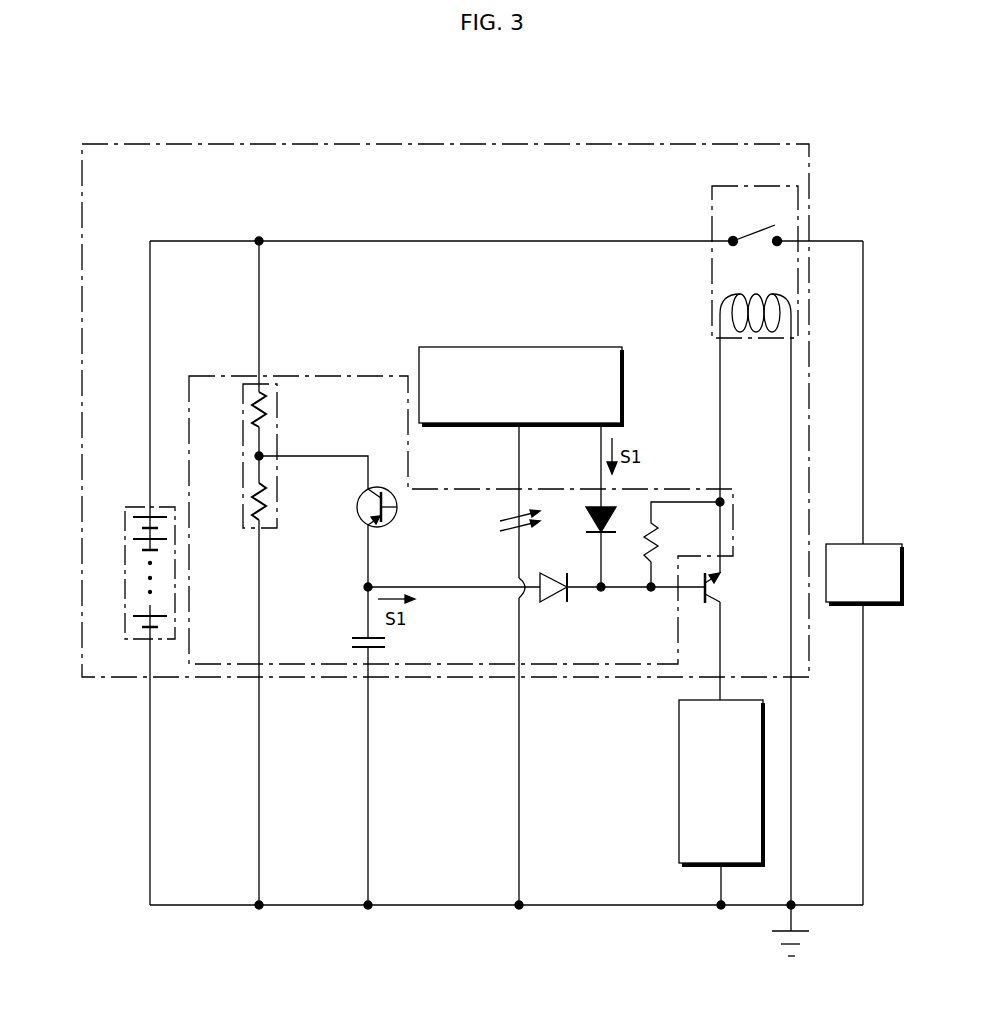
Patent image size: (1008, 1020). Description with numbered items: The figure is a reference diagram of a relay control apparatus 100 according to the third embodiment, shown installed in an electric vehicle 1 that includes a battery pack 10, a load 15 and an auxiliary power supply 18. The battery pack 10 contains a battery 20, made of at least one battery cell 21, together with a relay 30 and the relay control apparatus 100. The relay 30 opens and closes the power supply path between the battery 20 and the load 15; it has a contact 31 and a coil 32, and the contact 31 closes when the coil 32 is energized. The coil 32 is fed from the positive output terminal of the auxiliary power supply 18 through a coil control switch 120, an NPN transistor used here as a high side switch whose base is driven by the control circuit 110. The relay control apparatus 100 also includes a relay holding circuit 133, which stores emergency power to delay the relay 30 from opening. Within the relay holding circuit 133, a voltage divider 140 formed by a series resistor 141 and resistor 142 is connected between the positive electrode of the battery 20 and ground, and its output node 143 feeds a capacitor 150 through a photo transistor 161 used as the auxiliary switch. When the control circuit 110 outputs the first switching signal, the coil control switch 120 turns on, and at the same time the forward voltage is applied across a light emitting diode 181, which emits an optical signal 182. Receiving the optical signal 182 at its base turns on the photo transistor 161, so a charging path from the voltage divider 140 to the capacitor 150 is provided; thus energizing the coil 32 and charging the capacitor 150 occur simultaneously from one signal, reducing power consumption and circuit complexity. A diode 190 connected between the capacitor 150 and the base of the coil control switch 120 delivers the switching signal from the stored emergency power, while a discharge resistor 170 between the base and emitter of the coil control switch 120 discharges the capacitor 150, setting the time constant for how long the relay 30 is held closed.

The electric vehicle 1 is at (220, 88).
The battery pack 10 is at (298, 144).
The load 15 is at (882, 544).
The auxiliary power supply 18 is at (679, 741).
The battery 20 is at (132, 554).
The battery cell 21 is at (129, 517).
The relay 30 is at (755, 242).
The contact 31 is at (752, 229).
The coil 32 is at (759, 293).
The relay control apparatus 100 is at (547, 301).
The control circuit 110 is at (590, 347).
The coil control switch 120 is at (722, 591).
The relay holding circuit 133 is at (347, 376).
The voltage divider 140 is at (261, 573).
The resistor 141 is at (249, 402).
The resistor 142 is at (249, 496).
The output node 143 is at (253, 461).
The capacitor 150 is at (350, 641).
The photo transistor 161 is at (357, 510).
The discharge resistor 170 is at (660, 539).
The light emitting diode 181 is at (602, 536).
The optical signal 182 is at (501, 520).
The diode 190 is at (557, 563).